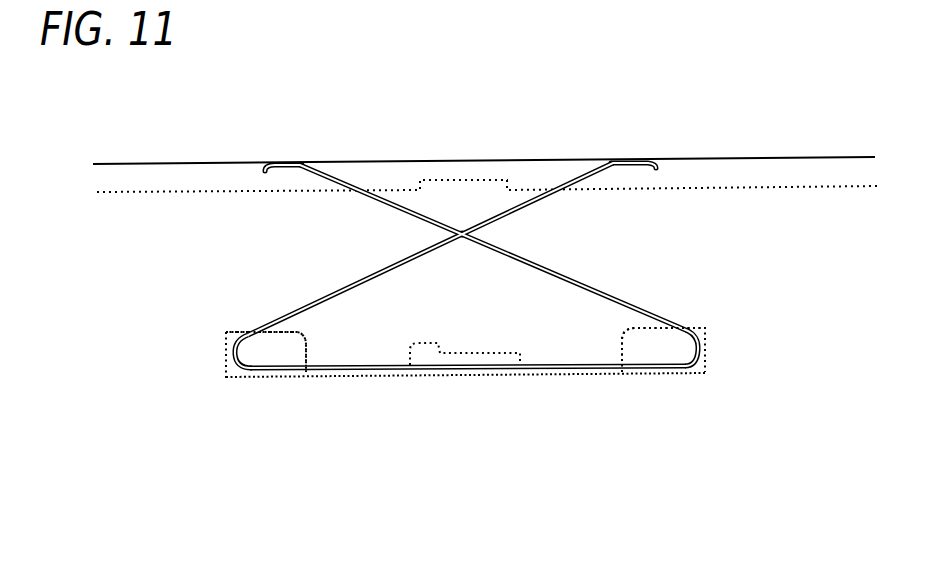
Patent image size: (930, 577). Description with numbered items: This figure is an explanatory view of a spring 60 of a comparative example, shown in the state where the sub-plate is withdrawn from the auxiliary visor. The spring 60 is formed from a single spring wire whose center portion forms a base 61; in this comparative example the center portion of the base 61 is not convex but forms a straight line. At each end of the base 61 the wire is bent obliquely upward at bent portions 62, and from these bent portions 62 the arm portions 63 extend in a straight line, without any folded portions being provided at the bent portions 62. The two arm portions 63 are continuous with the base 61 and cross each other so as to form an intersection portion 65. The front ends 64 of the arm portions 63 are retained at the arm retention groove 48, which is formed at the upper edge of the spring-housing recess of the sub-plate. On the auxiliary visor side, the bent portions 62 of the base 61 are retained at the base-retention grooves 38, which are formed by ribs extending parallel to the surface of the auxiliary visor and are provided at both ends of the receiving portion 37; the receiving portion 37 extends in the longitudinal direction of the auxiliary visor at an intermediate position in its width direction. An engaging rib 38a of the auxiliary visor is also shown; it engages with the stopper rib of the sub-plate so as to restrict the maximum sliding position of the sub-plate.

The receiving portion 37 is at (572, 375).
The base-retention grooves 38 is at (282, 352).
The engaging rib 38a is at (407, 365).
The arm retention groove 48 is at (482, 226).
The spring 60 is at (465, 281).
The base 61 is at (480, 375).
The bent portions 62 is at (228, 362).
The arm portions 63 is at (335, 297).
The front ends 64 is at (282, 163).
The intersection portion 65 is at (470, 236).